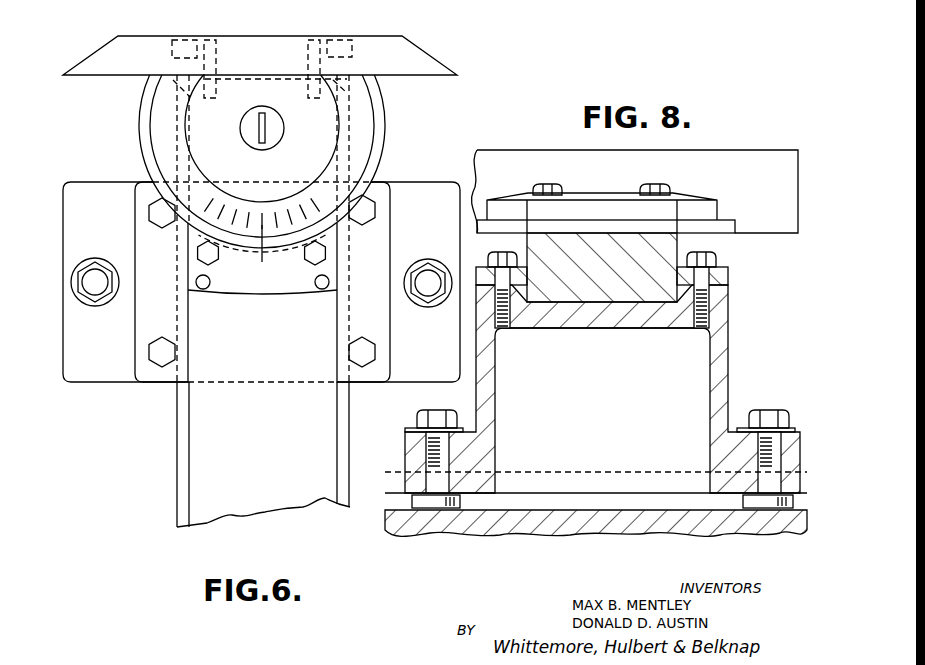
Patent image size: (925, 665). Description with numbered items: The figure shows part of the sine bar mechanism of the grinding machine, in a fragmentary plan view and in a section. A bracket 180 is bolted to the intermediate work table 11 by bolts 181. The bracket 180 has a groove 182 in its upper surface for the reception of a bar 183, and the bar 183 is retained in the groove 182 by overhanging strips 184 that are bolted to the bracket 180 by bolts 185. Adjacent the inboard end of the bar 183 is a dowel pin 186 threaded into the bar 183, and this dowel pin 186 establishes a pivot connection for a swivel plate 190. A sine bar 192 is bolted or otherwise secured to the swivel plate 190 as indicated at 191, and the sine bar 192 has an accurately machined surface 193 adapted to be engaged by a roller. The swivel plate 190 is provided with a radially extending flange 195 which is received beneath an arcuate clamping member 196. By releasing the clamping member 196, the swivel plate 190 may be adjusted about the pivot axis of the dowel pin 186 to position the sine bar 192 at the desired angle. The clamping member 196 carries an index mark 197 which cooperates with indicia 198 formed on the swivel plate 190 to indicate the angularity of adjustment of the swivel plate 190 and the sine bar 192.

In FIG. 8, the intermediate work table 11 is at (475, 528).
In FIG. 6, the bracket 180 is at (95, 382).
In FIG. 8, the bracket 180 is at (483, 429).
In FIG. 6, the bolts 181 is at (95, 302).
In FIG. 8, the bolts 181 is at (420, 422).
In FIG. 8, the groove 182 is at (584, 296).
In FIG. 6, the bar 183 is at (182, 471).
In FIG. 8, the bar 183 is at (672, 246).
In FIG. 6, the overhanging strips 184 is at (143, 233).
In FIG. 8, the overhanging strips 184 is at (712, 284).
In FIG. 6, the bolts 185 is at (375, 353).
In FIG. 8, the bolts 185 is at (712, 261).
In FIG. 6, the dowel pin 186 is at (274, 133).
In FIG. 6, the swivel plate 190 is at (362, 127).
In FIG. 8, the swivel plate 190 is at (710, 205).
In FIG. 6, the fastening 191 is at (343, 48).
In FIG. 6, the sine bar 192 is at (422, 60).
In FIG. 8, the sine bar 192 is at (708, 167).
In FIG. 6, the accurately machined surface 193 is at (420, 77).
In FIG. 8, the accurately machined surface 193 is at (527, 165).
In FIG. 6, the radially extending flange 195 is at (141, 126).
In FIG. 8, the radially extending flange 195 is at (713, 226).
In FIG. 6, the arcuate clamping member 196 is at (282, 296).
In FIG. 8, the arcuate clamping member 196 is at (595, 217).
In FIG. 6, the index mark 197 is at (262, 247).
In FIG. 6, the indicia 198 is at (232, 222).